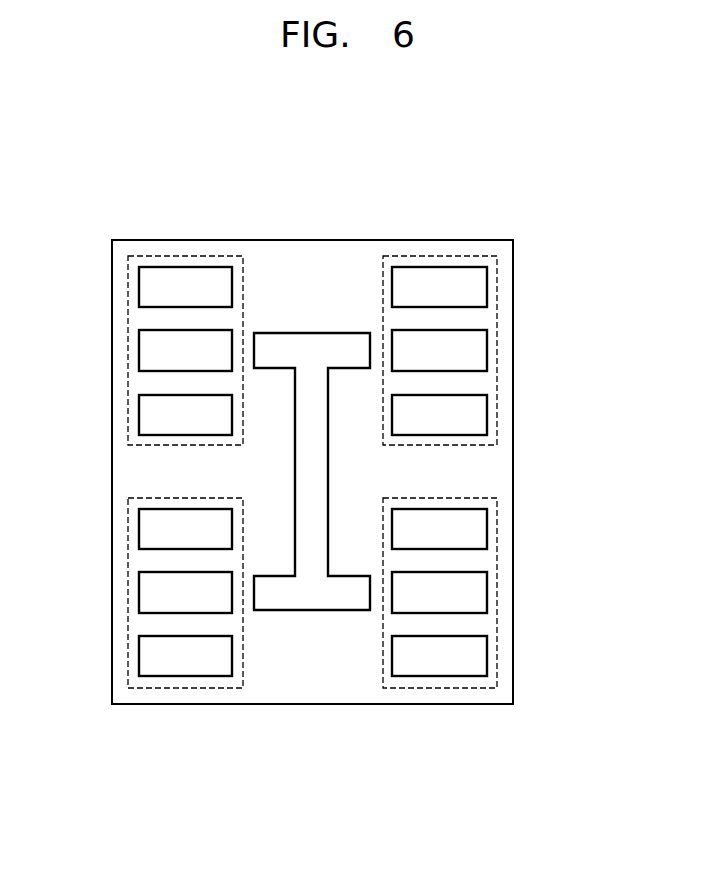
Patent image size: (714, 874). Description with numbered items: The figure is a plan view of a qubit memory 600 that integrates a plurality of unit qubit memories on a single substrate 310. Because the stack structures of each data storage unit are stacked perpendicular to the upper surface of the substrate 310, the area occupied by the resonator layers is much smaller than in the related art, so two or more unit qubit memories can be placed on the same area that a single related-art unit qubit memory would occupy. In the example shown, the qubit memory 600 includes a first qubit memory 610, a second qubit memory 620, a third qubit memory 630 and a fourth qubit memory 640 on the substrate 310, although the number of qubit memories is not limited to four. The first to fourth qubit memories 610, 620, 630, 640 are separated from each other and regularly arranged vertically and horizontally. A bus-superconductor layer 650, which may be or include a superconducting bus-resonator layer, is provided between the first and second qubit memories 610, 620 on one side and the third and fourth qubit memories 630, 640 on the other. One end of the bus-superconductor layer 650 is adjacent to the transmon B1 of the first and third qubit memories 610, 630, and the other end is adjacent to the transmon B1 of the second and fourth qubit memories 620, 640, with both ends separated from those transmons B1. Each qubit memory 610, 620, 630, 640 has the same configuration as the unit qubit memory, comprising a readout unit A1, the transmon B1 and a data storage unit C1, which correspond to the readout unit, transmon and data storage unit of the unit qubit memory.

The qubit memory 600 is at (517, 220).
The substrate 310 is at (503, 470).
The bus-superconductor layer 650 is at (314, 340).
The first qubit memory 610 is at (128, 313).
The second qubit memory 620 is at (128, 587).
The third qubit memory 630 is at (497, 313).
The fourth qubit memory 640 is at (497, 590).
The readout unit A1 is at (185, 275).
The transmon B1 is at (148, 348).
The data storage unit C1 is at (148, 410).